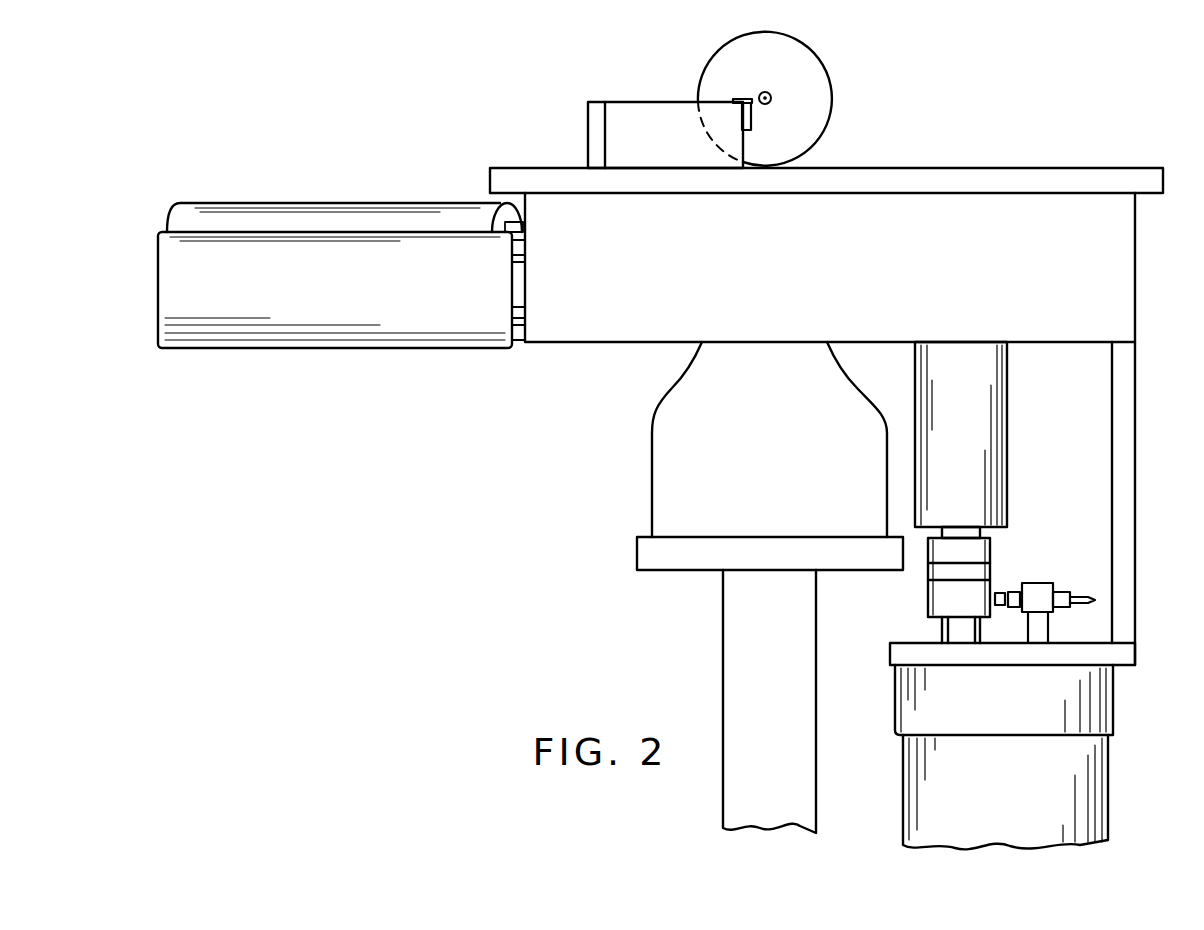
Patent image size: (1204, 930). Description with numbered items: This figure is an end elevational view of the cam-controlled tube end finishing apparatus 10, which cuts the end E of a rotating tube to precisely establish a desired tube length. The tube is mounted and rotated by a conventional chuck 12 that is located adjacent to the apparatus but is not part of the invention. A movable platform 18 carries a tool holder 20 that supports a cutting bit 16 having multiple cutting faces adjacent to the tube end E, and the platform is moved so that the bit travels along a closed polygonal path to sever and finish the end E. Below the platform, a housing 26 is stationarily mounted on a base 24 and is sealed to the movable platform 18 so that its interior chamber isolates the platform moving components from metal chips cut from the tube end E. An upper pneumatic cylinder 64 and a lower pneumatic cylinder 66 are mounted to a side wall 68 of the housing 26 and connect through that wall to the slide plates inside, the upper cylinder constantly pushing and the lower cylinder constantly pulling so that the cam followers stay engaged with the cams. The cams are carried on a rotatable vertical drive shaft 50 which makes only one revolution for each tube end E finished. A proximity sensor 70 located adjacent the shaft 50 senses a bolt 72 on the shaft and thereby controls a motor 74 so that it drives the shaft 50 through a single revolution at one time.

The cam-controlled tube end finishing apparatus 10 is at (1022, 120).
The chuck 12 is at (833, 83).
The cutting bit 16 is at (752, 120).
The movable platform 18 is at (912, 168).
The tool holder 20 is at (648, 102).
The base 24 is at (652, 487).
The housing 26 is at (620, 342).
The drive shaft 50 is at (1010, 531).
The upper pneumatic cylinder 64 is at (268, 217).
The lower pneumatic cylinder 66 is at (347, 326).
The side wall 68 is at (512, 292).
The proximity sensor 70 is at (1058, 586).
The bolt 72 is at (995, 603).
The motor 74 is at (1112, 797).
The tube end E is at (769, 93).